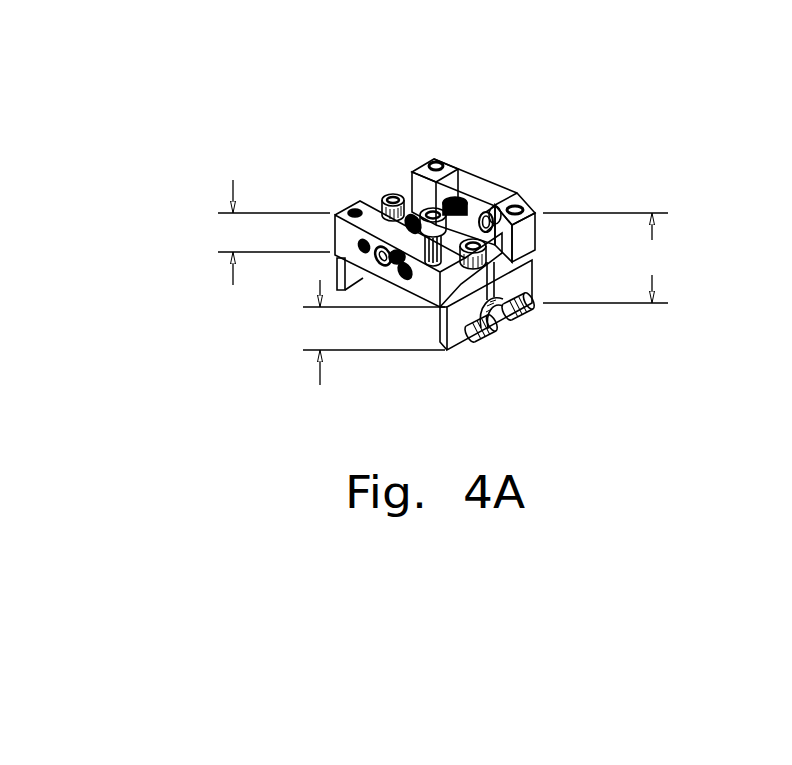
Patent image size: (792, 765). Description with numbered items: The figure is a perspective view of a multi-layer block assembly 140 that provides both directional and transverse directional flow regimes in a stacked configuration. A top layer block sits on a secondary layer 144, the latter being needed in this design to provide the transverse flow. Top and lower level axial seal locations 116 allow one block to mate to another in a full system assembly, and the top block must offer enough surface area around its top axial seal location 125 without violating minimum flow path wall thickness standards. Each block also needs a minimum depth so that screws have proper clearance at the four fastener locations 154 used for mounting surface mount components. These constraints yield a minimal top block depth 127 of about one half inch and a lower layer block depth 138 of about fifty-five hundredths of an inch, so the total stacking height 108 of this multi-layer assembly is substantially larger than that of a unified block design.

The stacking height 108 is at (705, 279).
The axial seal locations 116 is at (378, 256).
The top axial seal location 125 is at (340, 206).
The top block depth 127 is at (167, 253).
The lower layer block depth 138 is at (245, 349).
The multi-layer block assembly 140 is at (387, 196).
The secondary layer 144 is at (505, 322).
The fastener locations 154 is at (510, 208).